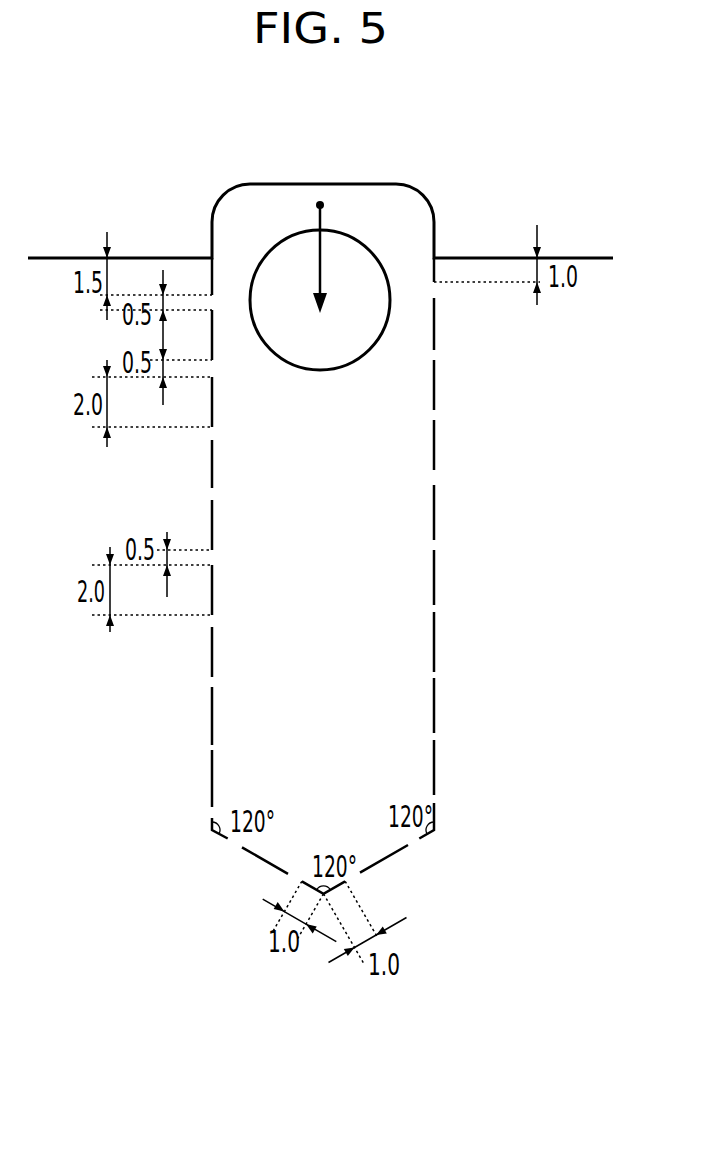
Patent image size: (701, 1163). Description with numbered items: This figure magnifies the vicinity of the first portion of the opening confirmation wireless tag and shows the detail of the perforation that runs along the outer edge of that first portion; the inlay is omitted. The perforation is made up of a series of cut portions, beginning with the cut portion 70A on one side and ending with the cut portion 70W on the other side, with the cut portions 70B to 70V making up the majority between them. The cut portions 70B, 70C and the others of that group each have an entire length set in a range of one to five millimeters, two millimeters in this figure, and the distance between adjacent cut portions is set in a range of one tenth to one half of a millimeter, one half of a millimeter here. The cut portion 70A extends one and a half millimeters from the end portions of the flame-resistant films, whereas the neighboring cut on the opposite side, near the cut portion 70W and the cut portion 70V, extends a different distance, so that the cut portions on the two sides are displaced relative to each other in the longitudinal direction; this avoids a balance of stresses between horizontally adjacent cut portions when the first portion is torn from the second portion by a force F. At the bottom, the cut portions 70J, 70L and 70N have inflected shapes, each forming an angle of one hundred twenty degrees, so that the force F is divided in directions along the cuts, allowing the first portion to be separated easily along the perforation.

The force F is at (315, 217).
The cut portion 70A is at (209, 278).
The cut portion 70B is at (212, 340).
The cut portion 70C is at (212, 393).
The cut portion 70W is at (434, 262).
The cut portion 70V is at (434, 318).
The cut portion 70J is at (212, 825).
The cut portion 70L is at (318, 887).
The cut portion 70N is at (434, 823).